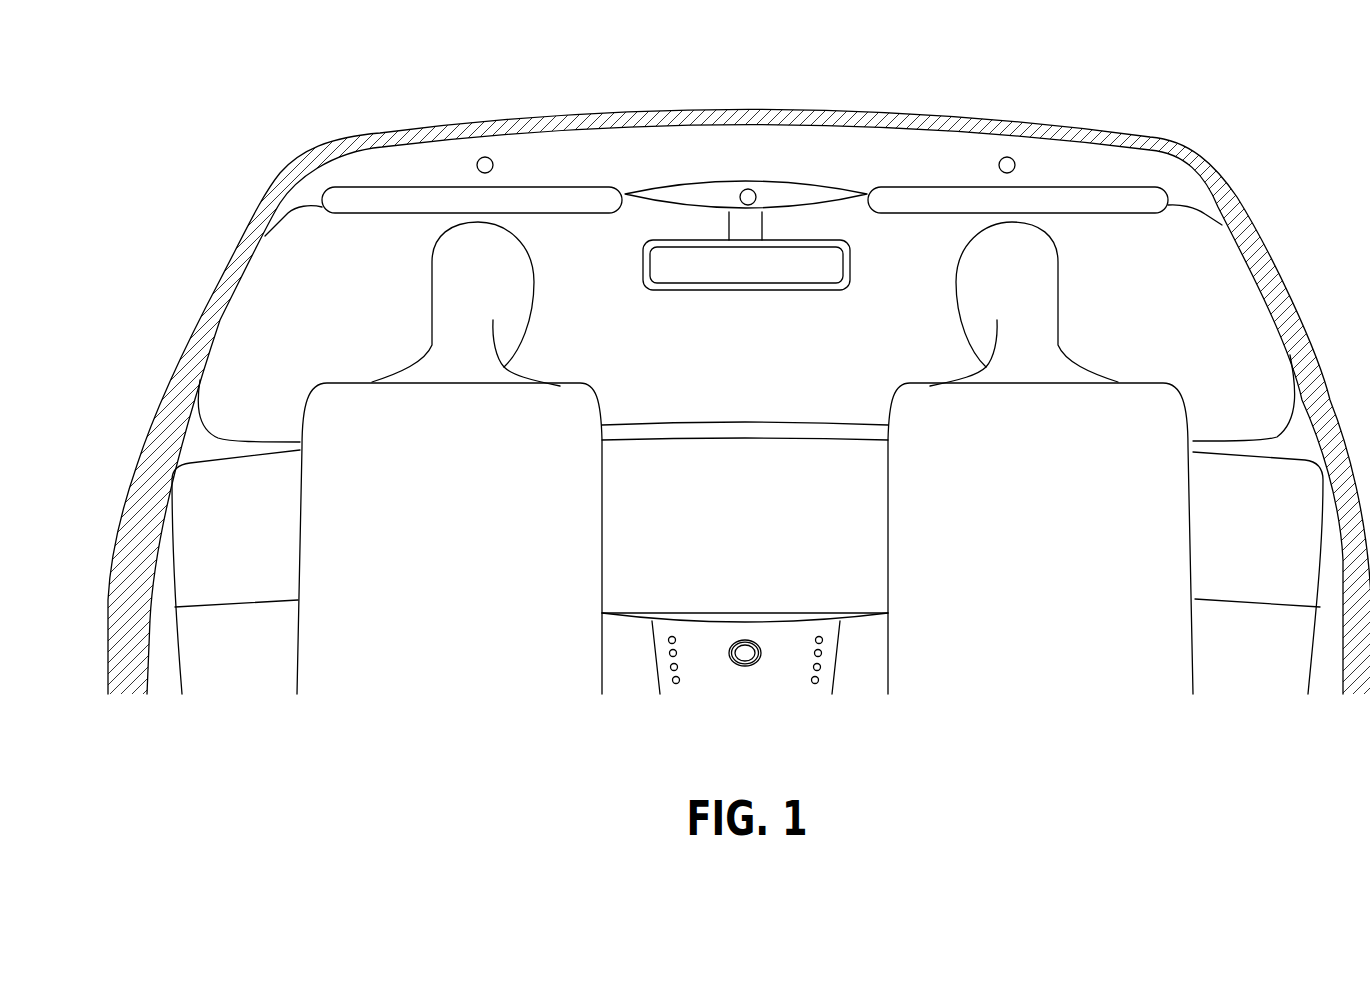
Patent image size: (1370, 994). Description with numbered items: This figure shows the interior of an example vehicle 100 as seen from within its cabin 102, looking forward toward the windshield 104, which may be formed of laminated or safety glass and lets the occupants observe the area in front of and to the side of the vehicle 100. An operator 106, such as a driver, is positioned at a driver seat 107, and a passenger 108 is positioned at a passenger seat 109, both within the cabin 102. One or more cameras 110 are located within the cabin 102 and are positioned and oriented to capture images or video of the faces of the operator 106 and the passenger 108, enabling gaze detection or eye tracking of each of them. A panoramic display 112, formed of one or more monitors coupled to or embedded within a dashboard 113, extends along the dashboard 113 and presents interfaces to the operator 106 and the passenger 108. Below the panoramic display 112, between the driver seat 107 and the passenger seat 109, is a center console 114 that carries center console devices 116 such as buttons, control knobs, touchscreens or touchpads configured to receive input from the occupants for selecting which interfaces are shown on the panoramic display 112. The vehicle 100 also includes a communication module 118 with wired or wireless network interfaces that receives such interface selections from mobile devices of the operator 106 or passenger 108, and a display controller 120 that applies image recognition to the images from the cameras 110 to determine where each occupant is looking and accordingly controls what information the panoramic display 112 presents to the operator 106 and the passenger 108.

The vehicle 100 is at (1128, 134).
The cabin 102 is at (276, 305).
The windshield 104 is at (768, 362).
The operator 106 is at (432, 288).
The driver seat 107 is at (425, 584).
The passenger 108 is at (1060, 287).
The passenger seat 109 is at (1013, 581).
The cameras 110 is at (486, 157).
The panoramic display 112 is at (220, 545).
The dashboard 113 is at (163, 543).
The center console 114 is at (707, 663).
The center console devices 116 is at (672, 681).
The communication module 118 is at (223, 666).
The display controller 120 is at (1238, 666).